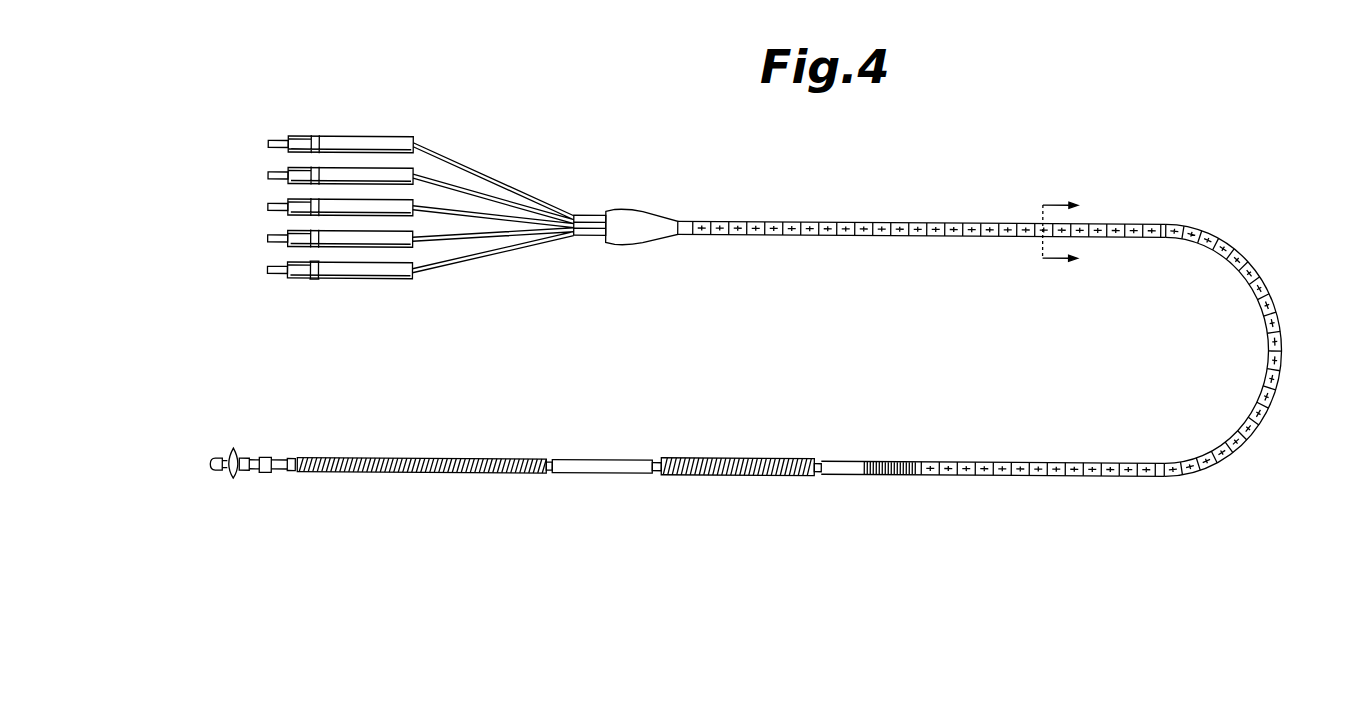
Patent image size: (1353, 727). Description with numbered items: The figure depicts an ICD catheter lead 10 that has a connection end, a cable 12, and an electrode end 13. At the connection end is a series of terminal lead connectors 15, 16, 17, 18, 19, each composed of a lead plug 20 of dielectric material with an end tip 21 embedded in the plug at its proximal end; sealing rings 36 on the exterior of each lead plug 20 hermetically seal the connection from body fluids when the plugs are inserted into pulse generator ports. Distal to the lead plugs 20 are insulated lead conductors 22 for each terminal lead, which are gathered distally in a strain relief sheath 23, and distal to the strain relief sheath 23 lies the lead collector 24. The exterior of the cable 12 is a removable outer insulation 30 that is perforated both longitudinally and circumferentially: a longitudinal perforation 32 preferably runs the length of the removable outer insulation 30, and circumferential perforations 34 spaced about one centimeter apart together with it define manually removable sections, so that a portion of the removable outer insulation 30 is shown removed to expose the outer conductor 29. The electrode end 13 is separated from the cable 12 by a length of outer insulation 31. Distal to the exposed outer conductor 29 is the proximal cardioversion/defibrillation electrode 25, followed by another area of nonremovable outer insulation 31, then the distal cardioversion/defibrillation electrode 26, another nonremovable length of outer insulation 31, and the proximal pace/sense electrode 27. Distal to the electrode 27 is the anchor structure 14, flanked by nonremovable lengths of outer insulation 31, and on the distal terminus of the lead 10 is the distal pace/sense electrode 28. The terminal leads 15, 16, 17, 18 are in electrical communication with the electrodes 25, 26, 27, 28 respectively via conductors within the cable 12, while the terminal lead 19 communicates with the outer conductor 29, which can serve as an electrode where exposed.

The lead 10 is at (1137, 194).
The cable 12 is at (1240, 244).
The electrode end 13 is at (580, 496).
The anchor structure 14 is at (229, 444).
The terminal lead connector 15 is at (371, 120).
The terminal lead connector 16 is at (272, 190).
The terminal lead connector 17 is at (272, 222).
The terminal lead connector 18 is at (275, 256).
The terminal lead connector 19 is at (310, 297).
The lead plug 20 is at (405, 139).
The end tip 21 is at (267, 147).
The insulated lead conductor 22 is at (510, 186).
The strain relief sheath 23 is at (597, 214).
The lead collector 24 is at (655, 216).
The proximal cardioversion/defibrillation electrode 25 is at (734, 451).
The distal cardioversion/defibrillation electrode 26 is at (443, 452).
The proximal pace/sense electrode 27 is at (268, 476).
The distal pace/sense electrode 28 is at (214, 469).
The outer conductor 29 is at (923, 451).
The removable outer insulation 30 is at (1188, 481).
The nonremovable outer insulation 31 is at (292, 460).
The longitudinal perforation 32 is at (1238, 435).
The circumferential perforations 34 is at (1272, 411).
The sealing ring 36 is at (314, 284).